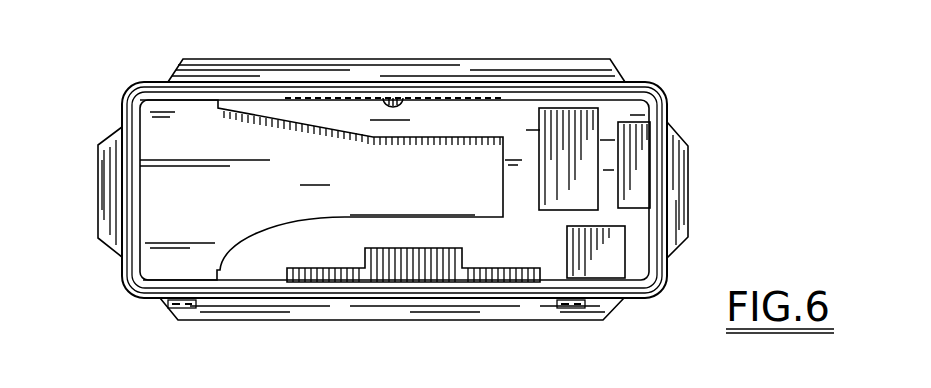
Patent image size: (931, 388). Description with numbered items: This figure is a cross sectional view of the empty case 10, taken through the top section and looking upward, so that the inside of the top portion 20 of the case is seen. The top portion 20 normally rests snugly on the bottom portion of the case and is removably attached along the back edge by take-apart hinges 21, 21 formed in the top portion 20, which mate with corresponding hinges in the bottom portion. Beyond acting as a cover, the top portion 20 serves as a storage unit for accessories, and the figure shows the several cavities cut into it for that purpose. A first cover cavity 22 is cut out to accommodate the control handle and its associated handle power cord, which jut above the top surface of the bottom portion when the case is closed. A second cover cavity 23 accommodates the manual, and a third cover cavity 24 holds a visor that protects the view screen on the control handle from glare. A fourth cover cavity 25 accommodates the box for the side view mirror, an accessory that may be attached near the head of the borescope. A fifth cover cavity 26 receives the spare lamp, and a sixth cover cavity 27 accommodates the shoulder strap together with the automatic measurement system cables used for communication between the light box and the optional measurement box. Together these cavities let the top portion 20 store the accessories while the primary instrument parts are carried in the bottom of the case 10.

The case 10 is at (112, 88).
The top portion 20 is at (658, 90).
The take-apart hinges 21 is at (178, 310).
The first cover cavity 22 is at (172, 277).
The second cover cavity 23 is at (394, 96).
The third cover cavity 24 is at (594, 135).
The fourth cover cavity 25 is at (643, 147).
The fifth cover cavity 26 is at (613, 262).
The sixth cover cavity 27 is at (421, 268).